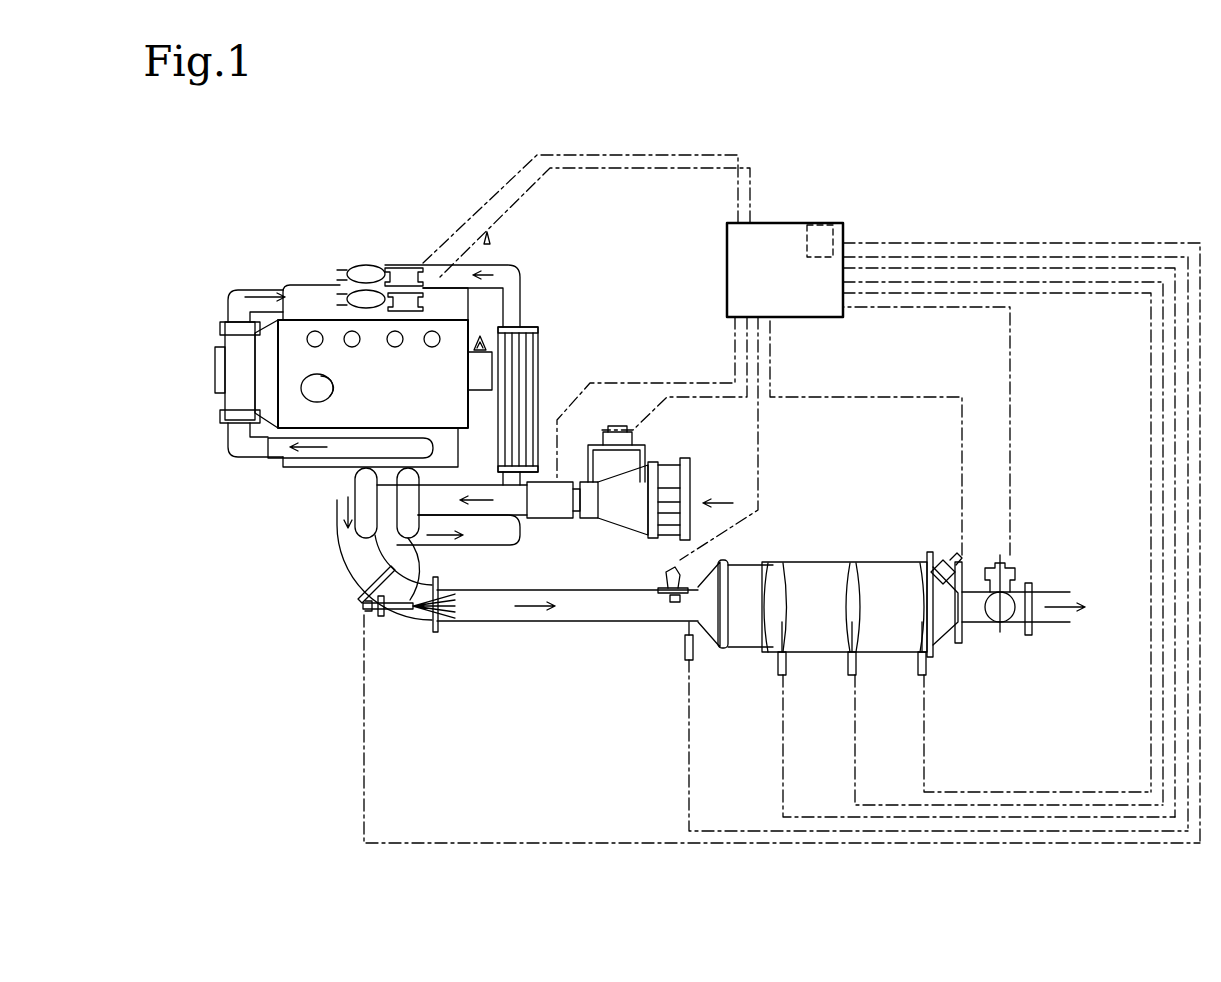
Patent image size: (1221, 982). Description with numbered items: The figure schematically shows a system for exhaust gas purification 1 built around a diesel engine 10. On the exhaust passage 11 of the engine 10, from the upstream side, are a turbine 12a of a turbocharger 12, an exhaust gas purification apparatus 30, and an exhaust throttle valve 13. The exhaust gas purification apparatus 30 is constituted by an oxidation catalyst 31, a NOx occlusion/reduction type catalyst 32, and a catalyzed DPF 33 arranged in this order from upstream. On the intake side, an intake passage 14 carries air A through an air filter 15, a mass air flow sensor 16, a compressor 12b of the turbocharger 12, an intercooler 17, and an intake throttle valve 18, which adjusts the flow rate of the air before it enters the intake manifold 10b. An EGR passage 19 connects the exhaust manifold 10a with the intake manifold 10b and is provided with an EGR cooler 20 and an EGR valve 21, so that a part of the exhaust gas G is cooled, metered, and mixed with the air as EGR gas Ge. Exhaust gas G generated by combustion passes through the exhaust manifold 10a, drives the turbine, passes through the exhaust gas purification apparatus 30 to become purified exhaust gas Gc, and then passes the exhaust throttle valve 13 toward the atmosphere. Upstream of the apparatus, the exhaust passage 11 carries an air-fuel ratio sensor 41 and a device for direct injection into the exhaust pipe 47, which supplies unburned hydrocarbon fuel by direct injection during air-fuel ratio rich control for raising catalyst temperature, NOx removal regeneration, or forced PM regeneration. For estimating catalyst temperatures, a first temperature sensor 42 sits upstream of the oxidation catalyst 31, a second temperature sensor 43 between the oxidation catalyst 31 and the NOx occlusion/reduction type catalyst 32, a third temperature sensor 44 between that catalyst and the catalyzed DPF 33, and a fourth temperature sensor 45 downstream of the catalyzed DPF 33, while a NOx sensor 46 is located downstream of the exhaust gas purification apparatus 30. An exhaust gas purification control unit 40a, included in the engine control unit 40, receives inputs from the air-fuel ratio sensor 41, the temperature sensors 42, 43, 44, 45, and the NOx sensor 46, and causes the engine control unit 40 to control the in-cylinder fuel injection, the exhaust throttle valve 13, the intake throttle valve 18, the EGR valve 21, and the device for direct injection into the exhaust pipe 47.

The system for exhaust gas purification 1 is at (935, 210).
The diesel engine 10 is at (374, 405).
The exhaust manifold 10a is at (283, 465).
The intake manifold 10b is at (290, 285).
The exhaust passage 11 is at (488, 622).
The turbocharger 12 is at (362, 540).
The turbine 12a is at (347, 492).
The compressor 12b is at (407, 538).
The exhaust throttle valve 13 is at (1010, 565).
The intake passage 14 is at (517, 285).
The air filter 15 is at (630, 510).
The mass air flow sensor 16 is at (548, 517).
The intercooler 17 is at (528, 353).
The intake throttle valve 18 is at (403, 268).
The EGR passage 19 is at (233, 295).
The EGR cooler 20 is at (232, 395).
The EGR valve 21 is at (403, 293).
The exhaust gas purification apparatus 30 is at (840, 562).
The oxidation catalyst 31 is at (750, 570).
The NOx occlusion/reduction type catalyst 32 is at (805, 570).
The catalyzed DPF 33 is at (878, 570).
The engine control unit 40 is at (780, 223).
The exhaust gas purification control unit 40a is at (822, 225).
The air-fuel ratio sensor 41 is at (673, 602).
The first temperature sensor 42 is at (690, 660).
The second temperature sensor 43 is at (786, 676).
The third temperature sensor 44 is at (856, 676).
The fourth temperature sensor 45 is at (926, 676).
The NOx sensor 46 is at (952, 560).
The device for direct injection into the exhaust pipe 47 is at (383, 616).